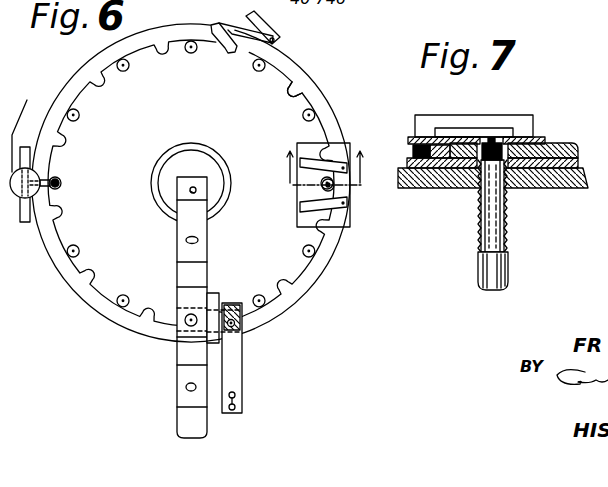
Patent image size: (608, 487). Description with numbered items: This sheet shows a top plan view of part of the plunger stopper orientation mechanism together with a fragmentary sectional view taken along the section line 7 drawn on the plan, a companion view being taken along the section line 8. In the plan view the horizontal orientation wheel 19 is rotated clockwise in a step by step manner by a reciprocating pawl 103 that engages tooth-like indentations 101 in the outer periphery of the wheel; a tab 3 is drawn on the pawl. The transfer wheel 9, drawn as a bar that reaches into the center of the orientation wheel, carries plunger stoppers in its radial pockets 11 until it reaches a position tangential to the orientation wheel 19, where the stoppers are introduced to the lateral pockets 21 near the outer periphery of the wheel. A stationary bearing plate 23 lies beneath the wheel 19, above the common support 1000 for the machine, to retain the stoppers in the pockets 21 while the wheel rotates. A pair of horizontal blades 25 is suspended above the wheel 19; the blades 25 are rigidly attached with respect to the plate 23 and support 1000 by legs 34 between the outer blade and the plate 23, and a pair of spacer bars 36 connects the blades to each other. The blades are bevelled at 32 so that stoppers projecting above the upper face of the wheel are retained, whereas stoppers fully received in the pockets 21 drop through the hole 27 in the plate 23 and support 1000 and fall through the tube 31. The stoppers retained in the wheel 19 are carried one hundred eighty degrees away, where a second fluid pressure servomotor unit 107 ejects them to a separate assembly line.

In FIG. 6, the pawl 3 is at (233, 55).
In FIG. 6, the section line 7— 7 is at (324, 155).
In FIG. 6, the section line 8— 8 is at (324, 147).
In FIG. 6, the transfer wheel 9 is at (185, 423).
In FIG. 6, the radial pockets 11 is at (187, 387).
In FIG. 6, the horizontal orientation wheel 19 is at (118, 277).
In FIG. 7, the horizontal orientation wheel 19 is at (567, 145).
In FIG. 6, the lateral pockets 21 is at (318, 117).
In FIG. 6, the stationary plate 23 is at (277, 315).
In FIG. 7, the stationary plate 23 is at (570, 165).
In FIG. 6, the blades 25 is at (330, 138).
In FIG. 7, the blades 25 is at (430, 140).
In FIG. 7, the hole 27 is at (478, 202).
In FIG. 7, the tube 31 is at (510, 267).
In FIG. 7, the bevel 32 is at (477, 140).
In FIG. 7, the legs 34 is at (413, 150).
In FIG. 6, the spacer bars 36 is at (317, 168).
In FIG. 7, the spacer bars 36 is at (458, 125).
In FIG. 6, the tooth-like indentations 101 is at (290, 77).
In FIG. 6, the reciprocating pawl 103 is at (220, 25).
In FIG. 6, the second fluid pressure servomotor unit 107 is at (32, 152).
In FIG. 7, the common support 1000 is at (555, 183).